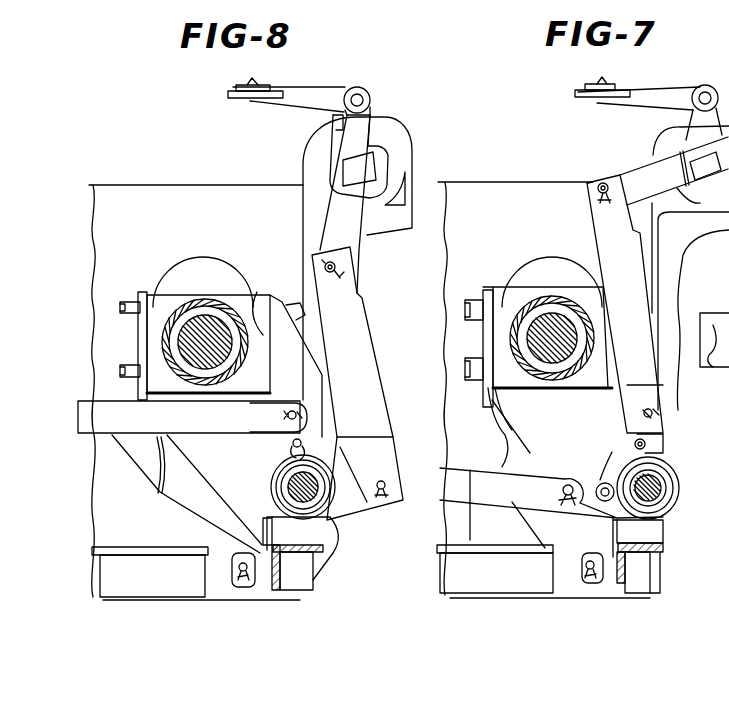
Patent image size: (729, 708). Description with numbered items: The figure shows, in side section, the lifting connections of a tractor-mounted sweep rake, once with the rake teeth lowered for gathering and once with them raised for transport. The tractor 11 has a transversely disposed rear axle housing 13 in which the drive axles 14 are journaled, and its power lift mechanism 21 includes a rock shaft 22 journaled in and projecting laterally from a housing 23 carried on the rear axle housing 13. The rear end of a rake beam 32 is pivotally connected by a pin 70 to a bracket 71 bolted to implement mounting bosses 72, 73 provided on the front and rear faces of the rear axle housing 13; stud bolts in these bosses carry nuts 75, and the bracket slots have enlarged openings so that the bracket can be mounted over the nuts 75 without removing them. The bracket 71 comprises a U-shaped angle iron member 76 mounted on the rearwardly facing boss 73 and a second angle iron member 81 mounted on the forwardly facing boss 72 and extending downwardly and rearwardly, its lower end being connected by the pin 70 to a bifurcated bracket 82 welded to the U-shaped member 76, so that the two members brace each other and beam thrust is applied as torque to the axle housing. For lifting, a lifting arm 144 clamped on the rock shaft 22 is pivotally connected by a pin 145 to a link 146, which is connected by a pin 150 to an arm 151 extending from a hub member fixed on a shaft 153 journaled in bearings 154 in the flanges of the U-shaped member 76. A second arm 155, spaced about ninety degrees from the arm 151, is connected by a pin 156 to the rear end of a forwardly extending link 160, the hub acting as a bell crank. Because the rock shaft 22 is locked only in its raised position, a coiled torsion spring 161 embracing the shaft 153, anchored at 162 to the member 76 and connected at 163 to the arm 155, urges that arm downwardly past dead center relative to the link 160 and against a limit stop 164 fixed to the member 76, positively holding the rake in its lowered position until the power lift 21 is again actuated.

In FIG. 8, the tractor 11 is at (164, 183).
In FIG. 7, the tractor 11 is at (529, 180).
In FIG. 8, the rear axle housing 13 is at (205, 270).
In FIG. 7, the rear axle housing 13 is at (540, 265).
In FIG. 8, the drive axles 14 is at (201, 336).
In FIG. 7, the drive axles 14 is at (550, 335).
In FIG. 8, the power lift mechanism 21 is at (410, 135).
In FIG. 7, the power lift mechanism 21 is at (690, 268).
In FIG. 8, the rock shaft 22 is at (355, 168).
In FIG. 7, the rock shaft 22 is at (700, 160).
In FIG. 8, the housing 23 is at (320, 142).
In FIG. 7, the housing 23 is at (685, 125).
In FIG. 8, the beam 32 is at (143, 585).
In FIG. 7, the beam 32 is at (494, 585).
In FIG. 8, the pin 70 is at (238, 578).
In FIG. 7, the pin 70 is at (587, 578).
In FIG. 8, the bracket 71 is at (145, 488).
In FIG. 7, the bracket 71 is at (520, 523).
In FIG. 8, the implement mounting boss 72 is at (151, 318).
In FIG. 7, the implement mounting boss 72 is at (510, 290).
In FIG. 8, the implement mounting boss 73 is at (265, 290).
In FIG. 7, the implement mounting boss 73 is at (603, 393).
In FIG. 8, the nuts 75 is at (122, 370).
In FIG. 7, the nuts 75 is at (472, 368).
In FIG. 8, the U-shaped angle iron member 76 is at (322, 537).
In FIG. 7, the U-shaped angle iron member 76 is at (655, 532).
In FIG. 8, the second angle iron member 81 is at (150, 453).
In FIG. 7, the second angle iron member 81 is at (465, 416).
In FIG. 8, the bifurcated bracket 82 is at (265, 585).
In FIG. 7, the bifurcated bracket 82 is at (612, 583).
In FIG. 8, the lifting arm 144 is at (340, 212).
In FIG. 7, the lifting arm 144 is at (640, 175).
In FIG. 8, the pin 145 is at (340, 265).
In FIG. 7, the pin 145 is at (598, 193).
In FIG. 8, the link 146 is at (350, 318).
In FIG. 7, the link 146 is at (605, 226).
In FIG. 8, the pin 150 is at (401, 500).
In FIG. 7, the pin 150 is at (640, 415).
In FIG. 8, the arm 151 is at (355, 500).
In FIG. 7, the arm 151 is at (658, 418).
In FIG. 8, the shaft 153 is at (292, 495).
In FIG. 7, the shaft 153 is at (661, 492).
In FIG. 8, the bearings 154 is at (296, 487).
In FIG. 7, the bearings 154 is at (666, 479).
In FIG. 8, the second arm 155 is at (280, 427).
In FIG. 7, the second arm 155 is at (613, 457).
In FIG. 8, the pin 156 is at (295, 405).
In FIG. 7, the pin 156 is at (562, 490).
In FIG. 8, the link 160 is at (98, 418).
In FIG. 7, the link 160 is at (470, 487).
In FIG. 8, the coiled torsion spring 161 is at (379, 480).
In FIG. 8, the anchor 162 is at (301, 441).
In FIG. 7, the anchor 162 is at (647, 443).
In FIG. 8, the connection 163 is at (302, 448).
In FIG. 7, the connection 163 is at (600, 484).
In FIG. 8, the limit stop 164 is at (268, 531).
In FIG. 7, the limit stop 164 is at (612, 529).